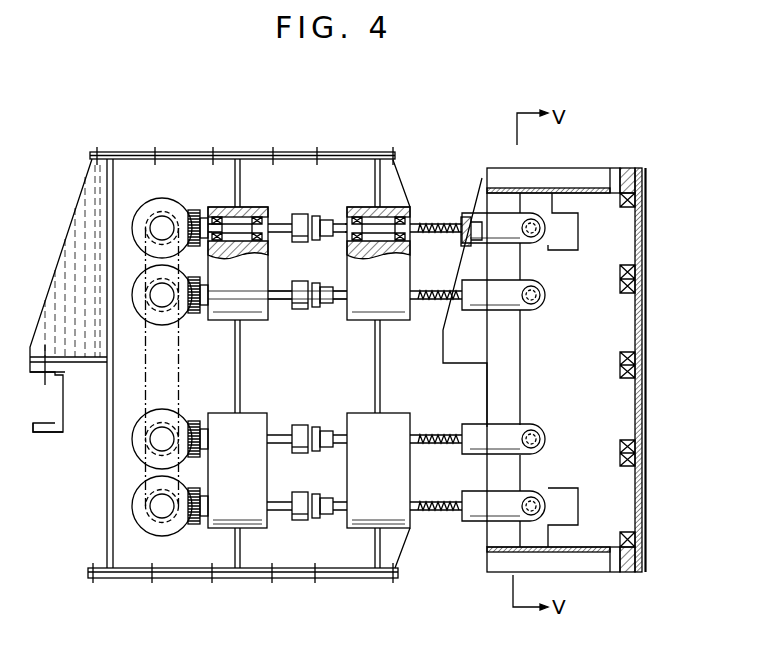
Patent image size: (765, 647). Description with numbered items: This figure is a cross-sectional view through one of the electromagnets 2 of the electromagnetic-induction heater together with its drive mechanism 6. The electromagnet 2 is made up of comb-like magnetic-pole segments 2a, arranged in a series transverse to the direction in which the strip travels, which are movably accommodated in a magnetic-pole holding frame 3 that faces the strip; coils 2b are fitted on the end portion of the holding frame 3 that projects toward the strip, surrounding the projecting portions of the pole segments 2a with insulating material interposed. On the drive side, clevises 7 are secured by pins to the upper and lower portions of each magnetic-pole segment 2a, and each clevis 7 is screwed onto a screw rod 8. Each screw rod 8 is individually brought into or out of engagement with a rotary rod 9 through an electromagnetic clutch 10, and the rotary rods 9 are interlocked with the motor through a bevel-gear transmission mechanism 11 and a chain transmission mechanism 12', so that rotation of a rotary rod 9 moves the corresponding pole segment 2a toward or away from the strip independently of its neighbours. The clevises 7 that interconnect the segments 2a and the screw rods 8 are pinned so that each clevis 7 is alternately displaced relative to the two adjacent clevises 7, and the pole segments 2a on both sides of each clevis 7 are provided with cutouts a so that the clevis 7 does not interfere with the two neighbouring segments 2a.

The electromagnet 2 is at (606, 338).
The magnetic-pole segment 2a is at (625, 247).
The coil 2b is at (640, 200).
The magnetic-pole holding frame 3 is at (598, 180).
The drive mechanism 6 is at (312, 130).
The clevis 7 is at (503, 225).
The screw rod 8 is at (432, 222).
The rotary rod 9 is at (282, 225).
The electromagnetic clutch 10 is at (303, 213).
The bevel-gear transmission mechanism 11 is at (178, 213).
The chain transmission mechanism 12' is at (180, 367).
The cutout a is at (567, 244).